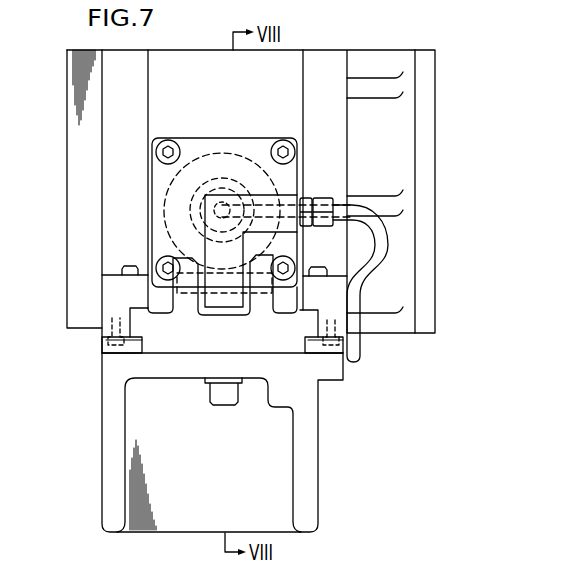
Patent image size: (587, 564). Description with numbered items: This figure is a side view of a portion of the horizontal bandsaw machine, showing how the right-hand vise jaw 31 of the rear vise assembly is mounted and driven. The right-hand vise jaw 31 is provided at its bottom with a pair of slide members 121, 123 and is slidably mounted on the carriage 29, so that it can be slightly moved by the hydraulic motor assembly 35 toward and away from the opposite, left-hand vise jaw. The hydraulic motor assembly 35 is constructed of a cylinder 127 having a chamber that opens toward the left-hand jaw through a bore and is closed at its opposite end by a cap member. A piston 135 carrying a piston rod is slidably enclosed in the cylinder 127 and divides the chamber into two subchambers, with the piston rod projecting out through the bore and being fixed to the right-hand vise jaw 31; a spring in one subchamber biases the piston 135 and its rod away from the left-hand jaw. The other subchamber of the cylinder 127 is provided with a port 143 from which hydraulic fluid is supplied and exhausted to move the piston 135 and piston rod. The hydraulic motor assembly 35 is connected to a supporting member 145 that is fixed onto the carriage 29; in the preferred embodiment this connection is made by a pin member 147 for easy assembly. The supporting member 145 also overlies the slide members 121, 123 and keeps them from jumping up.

The carriage 29 is at (312, 423).
The right-hand vise jaw 31 is at (433, 151).
The hydraulic motor assembly 35 is at (199, 124).
The slide member 121 is at (102, 341).
The slide member 123 is at (340, 347).
The cylinder 127 is at (234, 138).
The piston 135 is at (257, 162).
The port 143 is at (282, 200).
The supporting member 145 is at (178, 343).
The pin member 147 is at (243, 263).